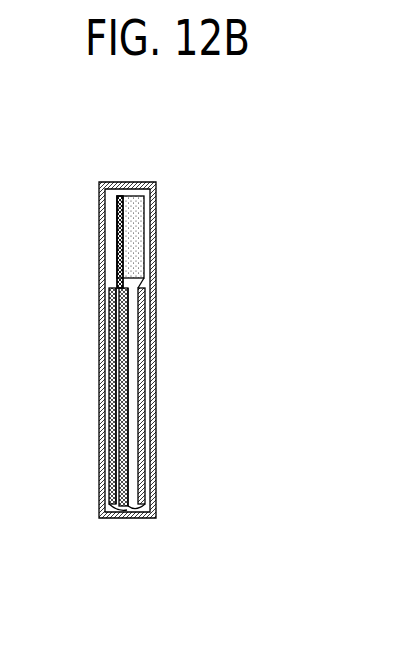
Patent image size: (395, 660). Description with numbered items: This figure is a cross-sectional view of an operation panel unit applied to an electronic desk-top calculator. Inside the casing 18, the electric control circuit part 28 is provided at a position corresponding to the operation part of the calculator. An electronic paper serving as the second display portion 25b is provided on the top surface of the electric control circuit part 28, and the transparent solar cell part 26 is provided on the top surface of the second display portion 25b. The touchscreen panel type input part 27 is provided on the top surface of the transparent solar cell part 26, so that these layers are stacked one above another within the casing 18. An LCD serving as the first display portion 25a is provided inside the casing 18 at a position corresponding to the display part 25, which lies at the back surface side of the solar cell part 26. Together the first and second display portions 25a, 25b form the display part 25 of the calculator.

The casing 18 is at (131, 173).
The display part 25 is at (203, 351).
The first display portion 25a is at (145, 251).
The second display portion 25b is at (127, 409).
The transparent solar cell part 26 is at (117, 228).
The touchscreen panel type input part 27 is at (112, 333).
The electric control circuit part 28 is at (146, 347).